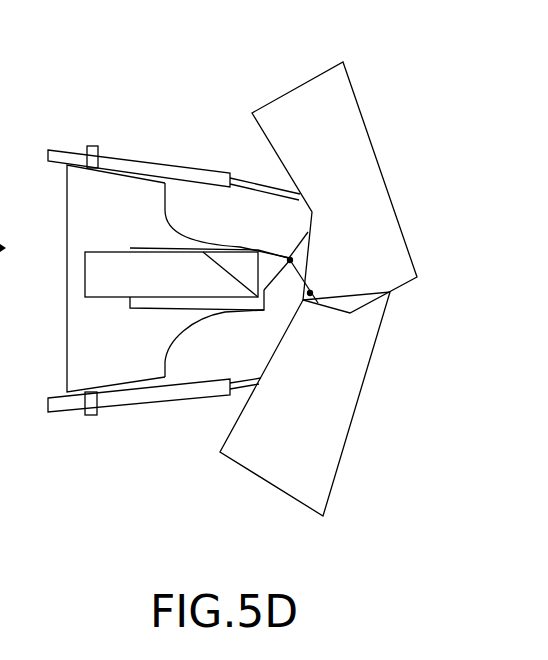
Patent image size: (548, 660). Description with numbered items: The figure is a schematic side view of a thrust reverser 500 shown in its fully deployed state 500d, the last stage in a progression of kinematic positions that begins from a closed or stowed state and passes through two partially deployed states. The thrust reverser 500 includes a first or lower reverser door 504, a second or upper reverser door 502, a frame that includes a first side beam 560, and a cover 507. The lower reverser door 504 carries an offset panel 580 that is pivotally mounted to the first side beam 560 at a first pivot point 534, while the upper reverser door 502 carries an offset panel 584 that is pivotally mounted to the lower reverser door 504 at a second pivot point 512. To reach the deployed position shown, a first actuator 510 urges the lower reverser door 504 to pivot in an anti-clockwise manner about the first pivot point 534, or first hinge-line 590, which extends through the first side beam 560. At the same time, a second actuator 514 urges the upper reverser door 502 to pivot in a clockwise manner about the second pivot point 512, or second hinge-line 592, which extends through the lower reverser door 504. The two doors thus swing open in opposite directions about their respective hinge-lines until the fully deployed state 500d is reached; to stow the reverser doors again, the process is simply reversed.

The thrust reverser 500 is at (145, 89).
The fully deployed state 500d is at (398, 142).
The second or upper reverser door 502 is at (353, 80).
The first or lower reverser door 504 is at (345, 448).
The cover 507 is at (98, 261).
The first actuator 510 is at (54, 410).
The second pivot point 512 is at (313, 296).
The second actuator 514 is at (60, 153).
The first pivot point 534 is at (293, 259).
The first side beam 560 is at (133, 301).
The offset panel 580 is at (283, 290).
The offset panel 584 is at (312, 268).
The first hinge-line 590 is at (320, 228).
The second hinge-line 592 is at (309, 296).